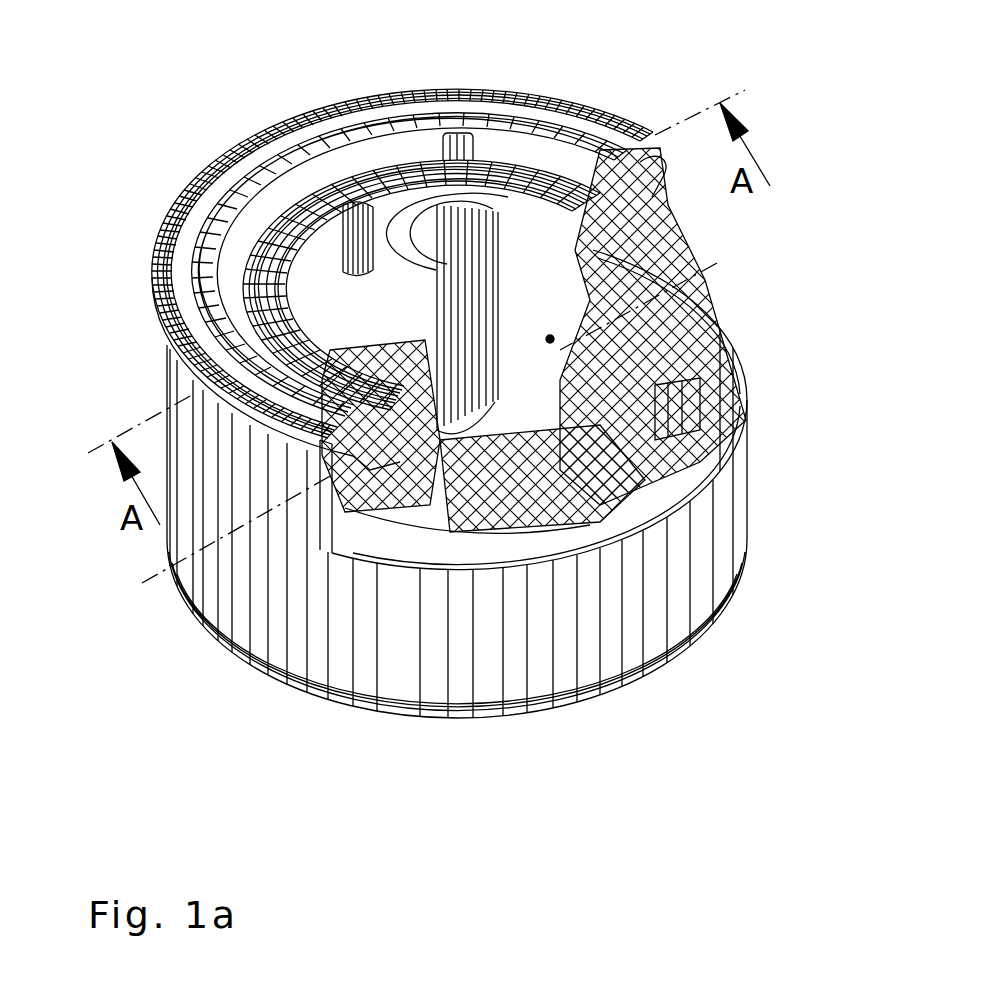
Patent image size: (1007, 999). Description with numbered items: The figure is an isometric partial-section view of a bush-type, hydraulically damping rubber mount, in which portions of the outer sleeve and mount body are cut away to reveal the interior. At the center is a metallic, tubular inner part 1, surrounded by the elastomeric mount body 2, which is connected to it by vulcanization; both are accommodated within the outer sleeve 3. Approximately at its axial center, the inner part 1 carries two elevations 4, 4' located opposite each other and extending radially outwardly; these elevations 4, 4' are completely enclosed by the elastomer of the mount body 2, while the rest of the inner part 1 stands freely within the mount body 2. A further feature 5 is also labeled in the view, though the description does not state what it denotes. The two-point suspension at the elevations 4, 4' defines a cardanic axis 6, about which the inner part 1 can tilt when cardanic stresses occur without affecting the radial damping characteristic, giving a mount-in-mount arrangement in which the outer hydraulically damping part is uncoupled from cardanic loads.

The inner part 1 is at (400, 212).
The mount body 2 is at (515, 130).
The outer sleeve 3 is at (685, 588).
The elevation 4 is at (608, 308).
The elevation 4' is at (362, 609).
The slot 5 is at (630, 408).
The cardanic axis 6 is at (727, 282).